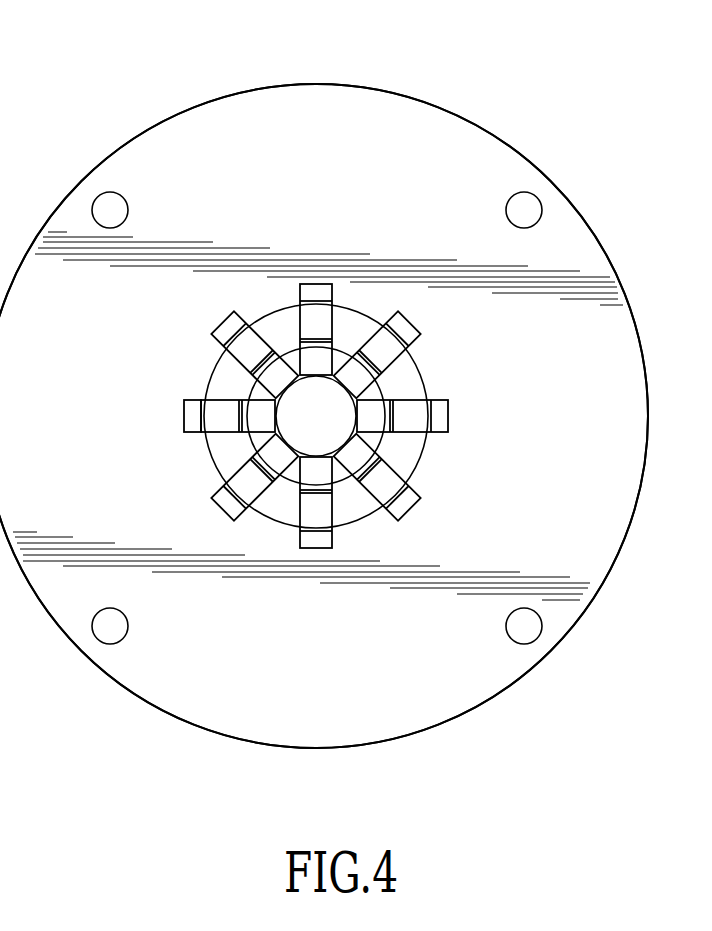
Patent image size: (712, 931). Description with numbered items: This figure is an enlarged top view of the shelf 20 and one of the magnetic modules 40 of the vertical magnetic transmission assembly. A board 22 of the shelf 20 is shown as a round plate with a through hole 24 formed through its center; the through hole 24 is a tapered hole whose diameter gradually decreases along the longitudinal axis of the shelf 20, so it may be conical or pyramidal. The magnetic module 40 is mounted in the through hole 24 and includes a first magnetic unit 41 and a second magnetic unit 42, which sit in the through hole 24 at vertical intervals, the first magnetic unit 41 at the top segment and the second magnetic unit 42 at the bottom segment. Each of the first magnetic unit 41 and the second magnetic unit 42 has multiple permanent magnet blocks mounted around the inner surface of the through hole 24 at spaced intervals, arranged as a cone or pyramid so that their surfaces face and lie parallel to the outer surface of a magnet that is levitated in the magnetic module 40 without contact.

The shelf 20 is at (152, 118).
The board 22 is at (427, 103).
The through hole 24 is at (299, 433).
The magnetic module 40 is at (214, 313).
The first magnetic unit 41 is at (195, 433).
The second magnetic unit 42 is at (248, 400).